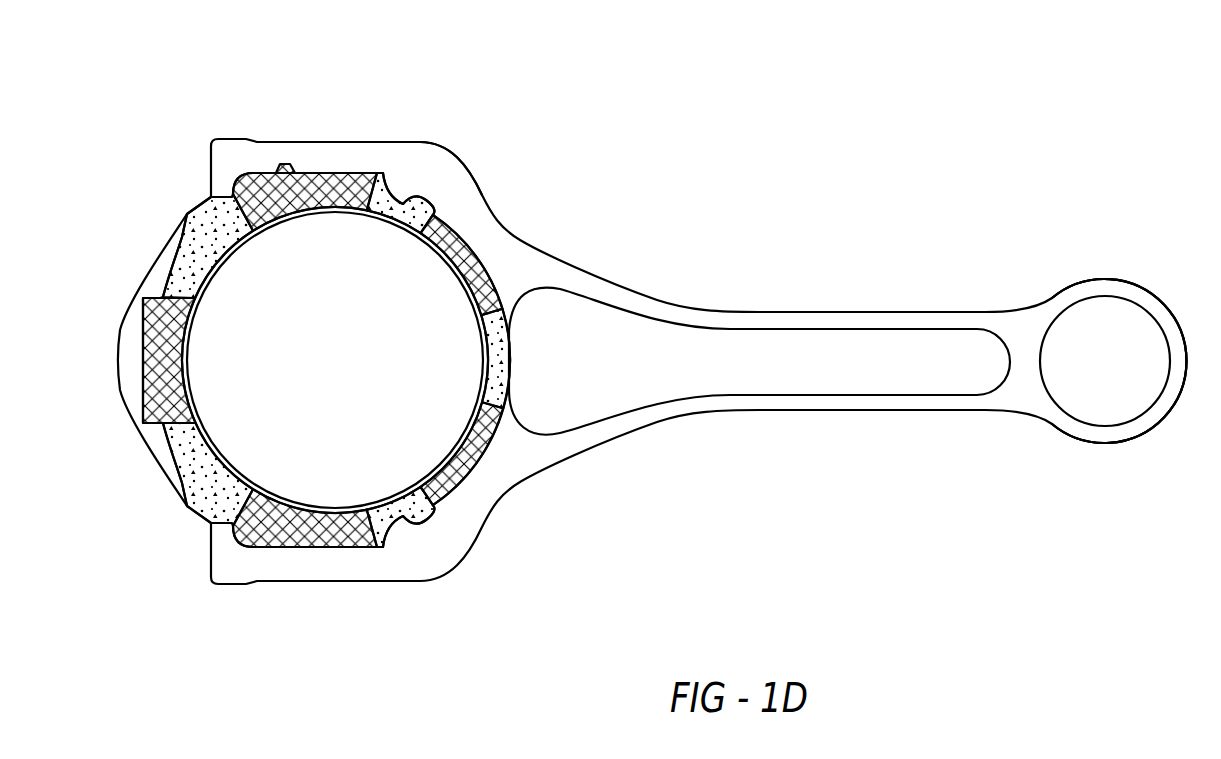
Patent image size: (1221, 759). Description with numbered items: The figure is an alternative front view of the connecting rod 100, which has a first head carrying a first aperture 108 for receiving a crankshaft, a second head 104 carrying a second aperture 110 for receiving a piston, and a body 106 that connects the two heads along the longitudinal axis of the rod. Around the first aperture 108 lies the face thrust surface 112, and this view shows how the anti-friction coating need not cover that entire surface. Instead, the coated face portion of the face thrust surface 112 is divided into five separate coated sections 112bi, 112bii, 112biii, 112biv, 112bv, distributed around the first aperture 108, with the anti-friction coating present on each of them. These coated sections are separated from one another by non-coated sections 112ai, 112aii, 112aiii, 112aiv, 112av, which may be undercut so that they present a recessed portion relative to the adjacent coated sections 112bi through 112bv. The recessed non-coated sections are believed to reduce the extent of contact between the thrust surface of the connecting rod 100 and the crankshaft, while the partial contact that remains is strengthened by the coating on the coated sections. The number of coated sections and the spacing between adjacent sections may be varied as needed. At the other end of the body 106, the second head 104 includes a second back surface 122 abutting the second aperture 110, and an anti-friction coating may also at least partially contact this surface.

The connecting rod 100 is at (948, 220).
The second head 104 is at (1126, 459).
The body 106 is at (834, 298).
The first aperture 108 is at (342, 392).
The second aperture 110 is at (1120, 378).
The face thrust surface 112 is at (345, 158).
The second back surface 122 is at (1143, 298).
The non-coated section 112ai is at (503, 368).
The non-coated section 112aii is at (407, 510).
The non-coated section 112aiii is at (202, 487).
The non-coated section 112aiv is at (198, 238).
The non-coated section 112av is at (405, 207).
The coated section 112bi is at (468, 260).
The coated section 112bii is at (467, 462).
The coated section 112biii is at (313, 540).
The coated section 112biv is at (153, 352).
The coated section 112bv is at (282, 184).